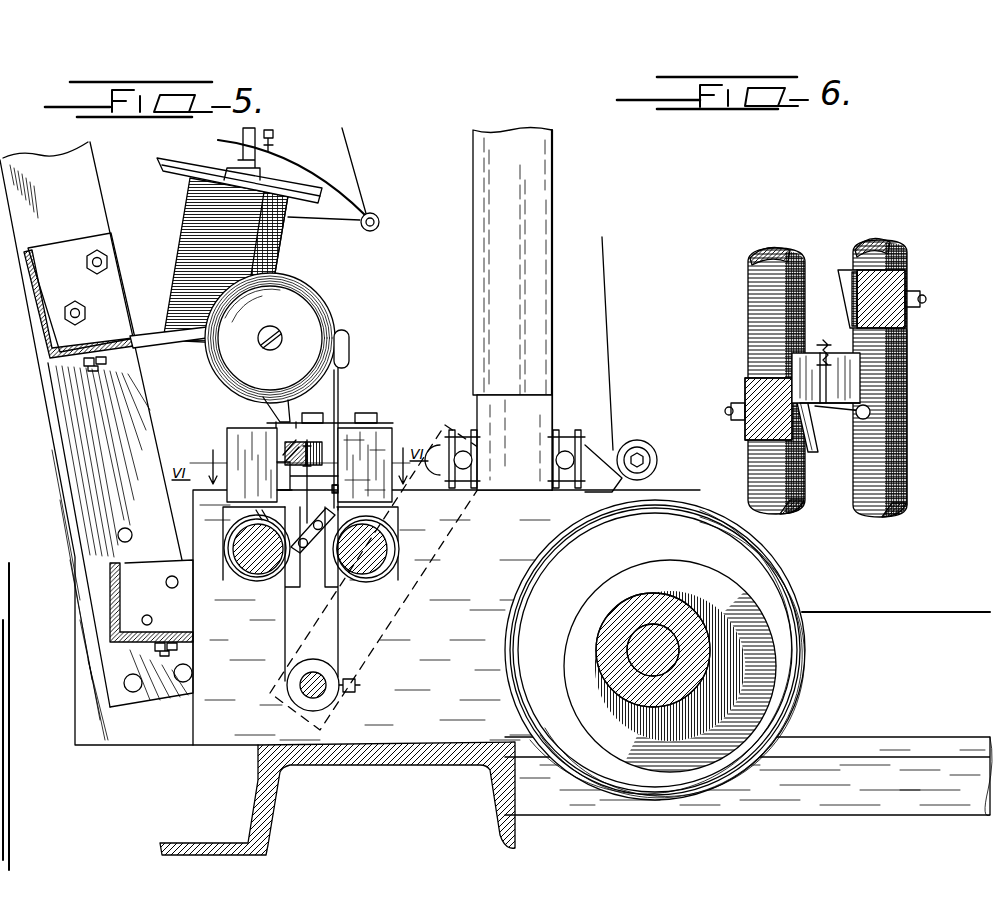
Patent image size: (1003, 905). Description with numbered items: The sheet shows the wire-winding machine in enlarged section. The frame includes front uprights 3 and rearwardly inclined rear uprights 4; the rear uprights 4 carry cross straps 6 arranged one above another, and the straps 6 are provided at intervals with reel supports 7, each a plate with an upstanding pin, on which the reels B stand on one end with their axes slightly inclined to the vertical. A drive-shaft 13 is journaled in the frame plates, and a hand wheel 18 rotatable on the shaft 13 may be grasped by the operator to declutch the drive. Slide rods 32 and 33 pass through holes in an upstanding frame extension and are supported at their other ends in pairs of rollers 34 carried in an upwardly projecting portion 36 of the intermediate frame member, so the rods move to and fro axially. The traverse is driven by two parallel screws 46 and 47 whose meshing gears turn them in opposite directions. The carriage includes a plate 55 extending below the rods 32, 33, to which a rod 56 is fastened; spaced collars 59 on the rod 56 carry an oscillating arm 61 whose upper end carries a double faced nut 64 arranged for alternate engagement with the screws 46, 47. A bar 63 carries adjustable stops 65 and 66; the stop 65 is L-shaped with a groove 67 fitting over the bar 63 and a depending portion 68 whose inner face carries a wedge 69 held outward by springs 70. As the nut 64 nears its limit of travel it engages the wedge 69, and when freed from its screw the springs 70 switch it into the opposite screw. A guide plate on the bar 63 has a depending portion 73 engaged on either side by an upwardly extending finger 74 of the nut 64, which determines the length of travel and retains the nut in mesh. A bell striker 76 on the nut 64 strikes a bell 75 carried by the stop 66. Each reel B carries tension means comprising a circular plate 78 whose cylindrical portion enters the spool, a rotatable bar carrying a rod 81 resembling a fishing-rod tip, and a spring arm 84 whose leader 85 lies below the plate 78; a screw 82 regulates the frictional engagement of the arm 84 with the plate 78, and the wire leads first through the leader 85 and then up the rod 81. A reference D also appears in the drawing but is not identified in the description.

In FIG. 5, the front uprights 3 is at (532, 178).
In FIG. 5, the rear uprights 4 is at (95, 215).
In FIG. 5, the cross straps 6 is at (120, 352).
In FIG. 5, the reel supports 7 is at (180, 352).
In FIG. 5, the drive-shaft 13 is at (650, 640).
In FIG. 5, the hand wheel 18 is at (760, 560).
In FIG. 5, the slide rod 32 is at (463, 458).
In FIG. 5, the slide rod 33 is at (583, 450).
In FIG. 5, the rollers 34 is at (590, 452).
In FIG. 5, the upwardly projecting portion 36 is at (535, 428).
In FIG. 5, the screw 46 is at (242, 560).
In FIG. 6, the screw 46 is at (762, 255).
In FIG. 5, the screw 47 is at (372, 553).
In FIG. 6, the screw 47 is at (893, 245).
In FIG. 5, the plate 55 is at (425, 582).
In FIG. 5, the rod 56 is at (313, 683).
In FIG. 5, the collar 59 is at (300, 700).
In FIG. 5, the oscillating arm 61 is at (297, 617).
In FIG. 5, the bar 63 is at (300, 432).
In FIG. 5, the double faced nut 64 is at (292, 562).
In FIG. 6, the double faced nut 64 is at (840, 412).
In FIG. 5, the stop 65 is at (246, 440).
In FIG. 6, the stop 65 is at (745, 418).
In FIG. 5, the stop 66 is at (380, 440).
In FIG. 6, the stop 66 is at (890, 290).
In FIG. 5, the groove 67 is at (309, 442).
In FIG. 5, the depending portion 68 is at (243, 493).
In FIG. 5, the wedge 69 is at (338, 468).
In FIG. 6, the wedge 69 is at (843, 283).
In FIG. 5, the springs 70 is at (262, 540).
In FIG. 6, the springs 70 is at (848, 268).
In FIG. 5, the depending portion 73 is at (337, 463).
In FIG. 6, the depending portion 73 is at (905, 352).
In FIG. 5, the finger 74 is at (300, 460).
In FIG. 6, the finger 74 is at (830, 345).
In FIG. 5, the bell 75 is at (318, 318).
In FIG. 5, the bell striker 76 is at (352, 358).
In FIG. 5, the circular plate 78 is at (175, 165).
In FIG. 6, the circular plate 78 is at (908, 398).
In FIG. 5, the rod 81 is at (255, 132).
In FIG. 5, the screw 82 is at (276, 142).
In FIG. 5, the spring arm 84 is at (300, 172).
In FIG. 5, the leader 85 is at (380, 222).
In FIG. 5, the reels B is at (182, 250).
In FIG. 5, the cord D is at (362, 178).